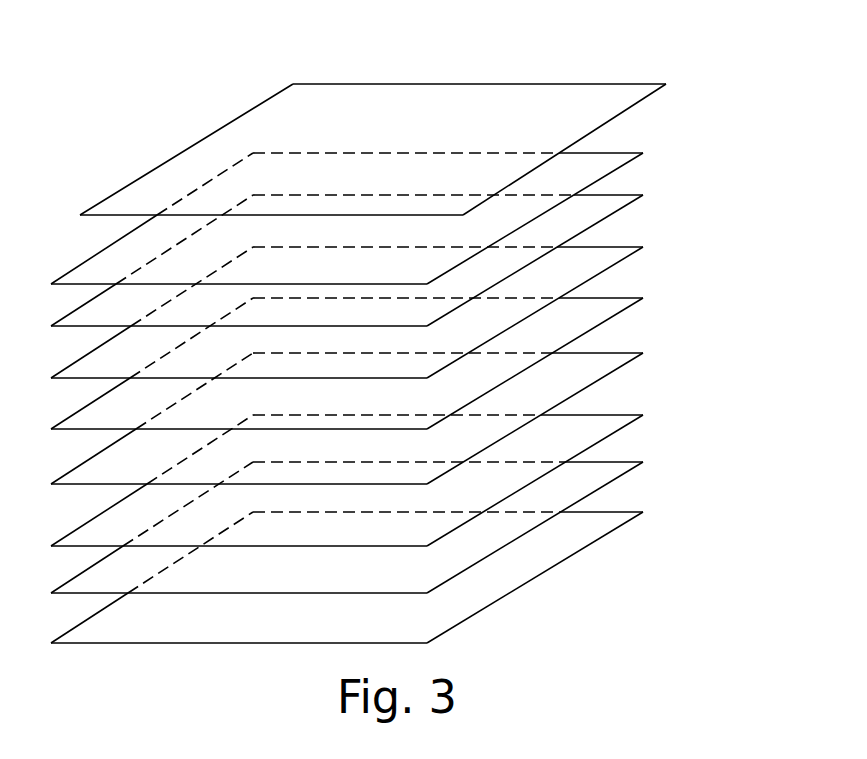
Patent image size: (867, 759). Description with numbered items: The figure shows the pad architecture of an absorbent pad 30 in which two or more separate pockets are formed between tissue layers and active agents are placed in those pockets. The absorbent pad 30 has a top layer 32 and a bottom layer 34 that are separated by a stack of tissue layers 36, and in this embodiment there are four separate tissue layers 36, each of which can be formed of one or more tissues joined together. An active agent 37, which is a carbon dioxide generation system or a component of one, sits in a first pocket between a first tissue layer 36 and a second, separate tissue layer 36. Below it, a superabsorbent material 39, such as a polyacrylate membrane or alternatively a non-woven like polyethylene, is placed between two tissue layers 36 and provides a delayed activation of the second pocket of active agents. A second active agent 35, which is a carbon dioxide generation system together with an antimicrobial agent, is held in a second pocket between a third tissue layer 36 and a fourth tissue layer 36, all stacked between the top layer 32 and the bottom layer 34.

The absorbent pad 30 is at (152, 97).
The top layer 32 is at (396, 92).
The bottom layer 34 is at (535, 578).
The second active agent 35 is at (614, 432).
The tissue layer 36 is at (613, 151).
The active agent 37 is at (614, 211).
The superabsorbent material 39 is at (614, 315).